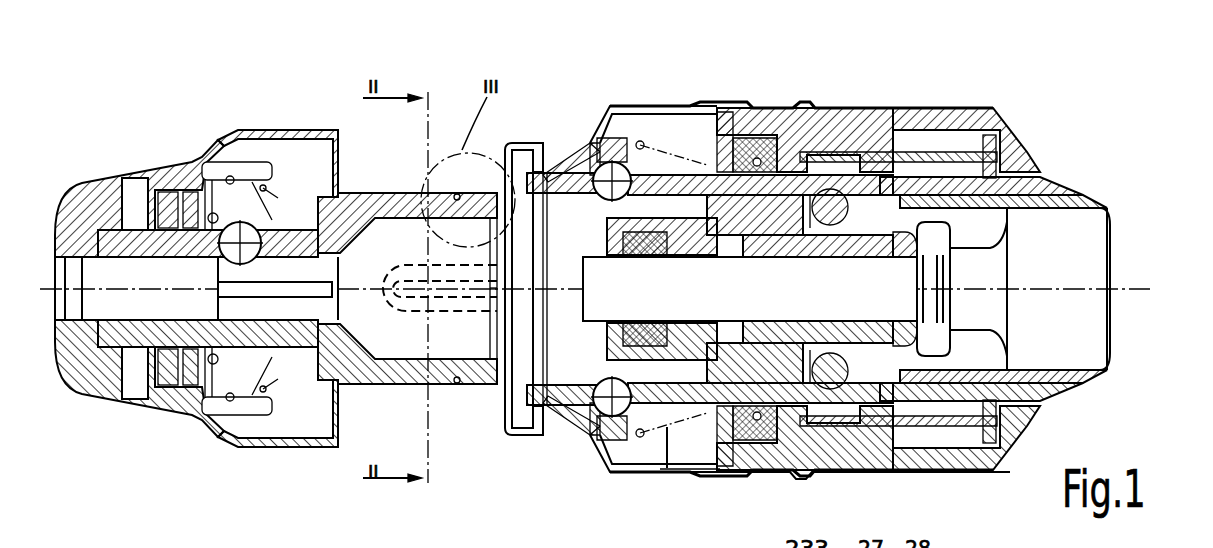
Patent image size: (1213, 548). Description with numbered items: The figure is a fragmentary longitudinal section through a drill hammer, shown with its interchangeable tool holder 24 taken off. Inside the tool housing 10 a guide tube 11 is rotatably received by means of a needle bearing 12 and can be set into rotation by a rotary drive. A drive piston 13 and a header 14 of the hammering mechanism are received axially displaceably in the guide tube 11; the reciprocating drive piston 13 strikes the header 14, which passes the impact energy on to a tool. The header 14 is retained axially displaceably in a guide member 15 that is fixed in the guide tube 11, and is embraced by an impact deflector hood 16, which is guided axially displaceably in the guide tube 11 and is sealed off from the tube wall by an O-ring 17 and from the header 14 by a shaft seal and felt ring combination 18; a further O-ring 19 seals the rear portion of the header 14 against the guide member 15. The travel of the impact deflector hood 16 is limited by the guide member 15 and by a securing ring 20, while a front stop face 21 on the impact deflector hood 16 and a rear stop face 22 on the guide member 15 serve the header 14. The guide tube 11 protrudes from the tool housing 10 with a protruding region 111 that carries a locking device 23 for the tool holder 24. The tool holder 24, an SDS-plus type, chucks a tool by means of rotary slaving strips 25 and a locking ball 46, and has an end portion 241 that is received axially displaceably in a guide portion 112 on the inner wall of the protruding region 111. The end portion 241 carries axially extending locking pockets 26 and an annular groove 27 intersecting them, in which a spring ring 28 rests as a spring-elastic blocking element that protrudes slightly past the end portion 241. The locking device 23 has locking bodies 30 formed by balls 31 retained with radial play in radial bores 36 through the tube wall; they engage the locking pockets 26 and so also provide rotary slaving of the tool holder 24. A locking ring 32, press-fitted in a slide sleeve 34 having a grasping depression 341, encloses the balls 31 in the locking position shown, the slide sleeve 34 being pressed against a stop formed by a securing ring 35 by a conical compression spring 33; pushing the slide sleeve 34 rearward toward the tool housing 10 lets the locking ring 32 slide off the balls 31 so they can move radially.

The tool housing 10 is at (957, 110).
The guide tube 11 is at (1047, 168).
The needle bearing 12 is at (833, 127).
The drive piston 13 is at (1073, 253).
The header 14 is at (900, 280).
The guide member 15 is at (900, 125).
The impact deflector hood 16 is at (680, 127).
The O-ring 17 is at (770, 127).
The shaft seal and felt ring combination 18 is at (657, 127).
The further O-ring 19 is at (910, 230).
The securing ring 20 is at (717, 127).
The front stop face 21 is at (707, 255).
The rear stop face 22 is at (788, 252).
The locking device 23 is at (583, 125).
The tool holder 24 is at (143, 163).
The end portion 241 is at (336, 160).
The rotary slaving strips 25 is at (287, 300).
The locking pockets 26 is at (402, 193).
The annular groove 27 is at (455, 245).
The spring ring 28 is at (455, 193).
The locking bodies 30 is at (605, 192).
The balls 31 is at (618, 127).
The locking ring 32 is at (600, 443).
The compression spring 33 is at (667, 470).
The slide sleeve 34 is at (517, 440).
The depression 341 is at (690, 475).
The securing ring 35 is at (546, 143).
The radial bores 36 is at (604, 192).
The locking ball 46 is at (236, 238).
The protruding region 111 is at (553, 437).
The guide portion 112 is at (535, 378).